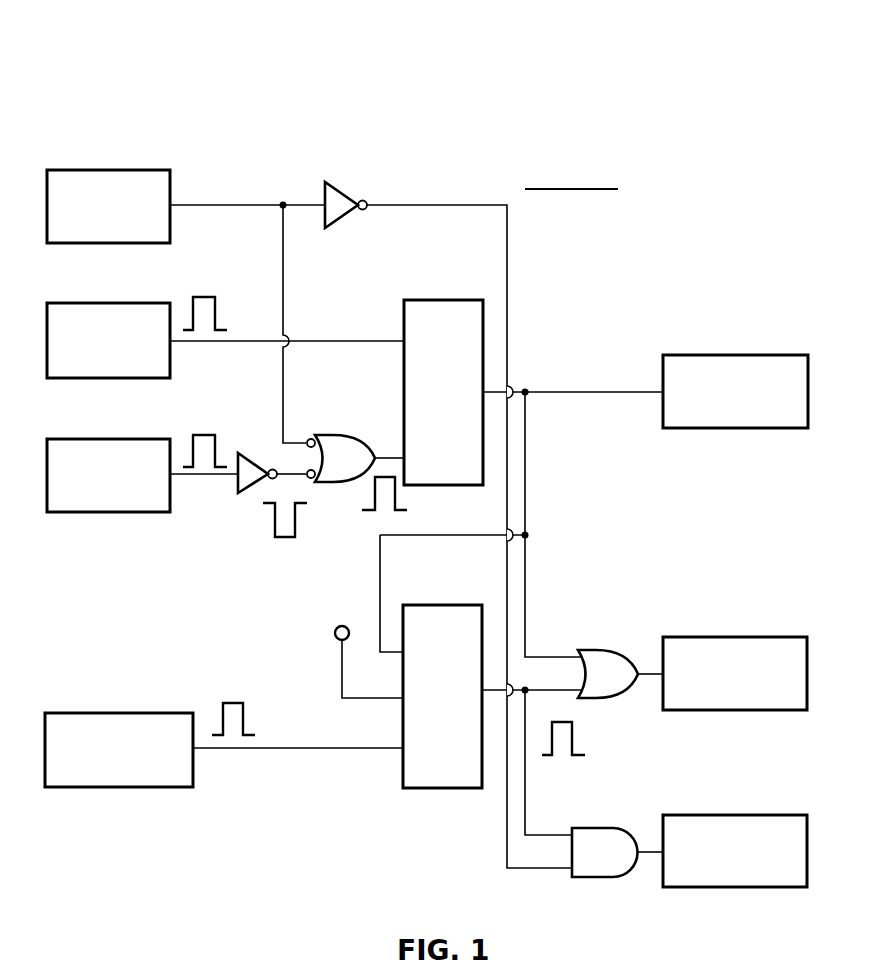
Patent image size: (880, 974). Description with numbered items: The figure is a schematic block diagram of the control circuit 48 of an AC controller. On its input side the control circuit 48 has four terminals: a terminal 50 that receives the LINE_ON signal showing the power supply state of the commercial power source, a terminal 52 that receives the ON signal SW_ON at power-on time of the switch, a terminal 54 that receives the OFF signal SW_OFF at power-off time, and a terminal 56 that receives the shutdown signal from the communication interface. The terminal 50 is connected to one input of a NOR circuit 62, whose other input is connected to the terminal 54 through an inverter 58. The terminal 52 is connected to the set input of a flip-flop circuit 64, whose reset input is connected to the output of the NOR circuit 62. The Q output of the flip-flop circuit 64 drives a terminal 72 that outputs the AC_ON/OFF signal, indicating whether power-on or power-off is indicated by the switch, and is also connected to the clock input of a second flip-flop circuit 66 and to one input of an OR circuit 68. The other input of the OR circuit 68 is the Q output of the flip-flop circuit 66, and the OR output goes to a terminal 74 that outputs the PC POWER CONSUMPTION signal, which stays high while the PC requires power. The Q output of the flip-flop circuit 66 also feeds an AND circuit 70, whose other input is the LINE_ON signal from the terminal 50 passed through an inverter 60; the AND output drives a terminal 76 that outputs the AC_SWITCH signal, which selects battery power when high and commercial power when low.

The control circuit 48 is at (160, 86).
The terminal 50 is at (98, 170).
The terminal 52 is at (98, 303).
The terminal 54 is at (98, 439).
The terminal 56 is at (98, 713).
The inverter 58 is at (250, 493).
The inverter 60 is at (345, 193).
The NOR circuit 62 is at (335, 435).
The flip-flop circuit 64 is at (406, 300).
The flip-flop circuit 66 is at (425, 788).
The OR circuit 68 is at (600, 650).
The AND circuit 70 is at (600, 828).
The terminal 72 is at (737, 355).
The terminal 74 is at (735, 637).
The terminal 76 is at (735, 815).